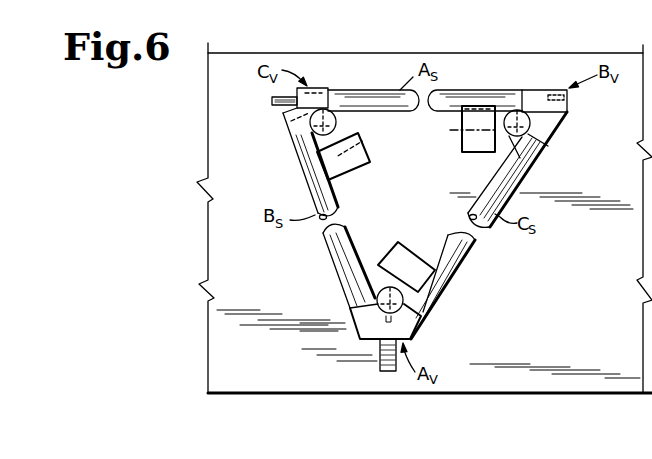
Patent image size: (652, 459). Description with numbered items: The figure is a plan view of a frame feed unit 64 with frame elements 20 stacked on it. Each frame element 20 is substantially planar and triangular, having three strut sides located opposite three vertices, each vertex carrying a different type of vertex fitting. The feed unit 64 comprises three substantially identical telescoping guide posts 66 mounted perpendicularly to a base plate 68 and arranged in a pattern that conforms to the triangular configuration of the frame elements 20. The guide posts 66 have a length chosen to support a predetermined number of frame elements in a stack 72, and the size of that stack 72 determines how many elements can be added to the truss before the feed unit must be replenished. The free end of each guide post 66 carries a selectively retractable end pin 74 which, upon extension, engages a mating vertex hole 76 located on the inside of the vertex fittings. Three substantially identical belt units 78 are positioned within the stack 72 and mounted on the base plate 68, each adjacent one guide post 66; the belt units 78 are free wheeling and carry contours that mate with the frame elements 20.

The frame element 20 is at (344, 197).
The frame feed unit 64 is at (487, 48).
The telescoping guide post 66 is at (338, 121).
The base plate 68 is at (617, 260).
The stack 72 is at (480, 254).
The end pin 74 is at (310, 140).
The vertex hole 76 is at (305, 116).
The belt unit 78 is at (463, 145).